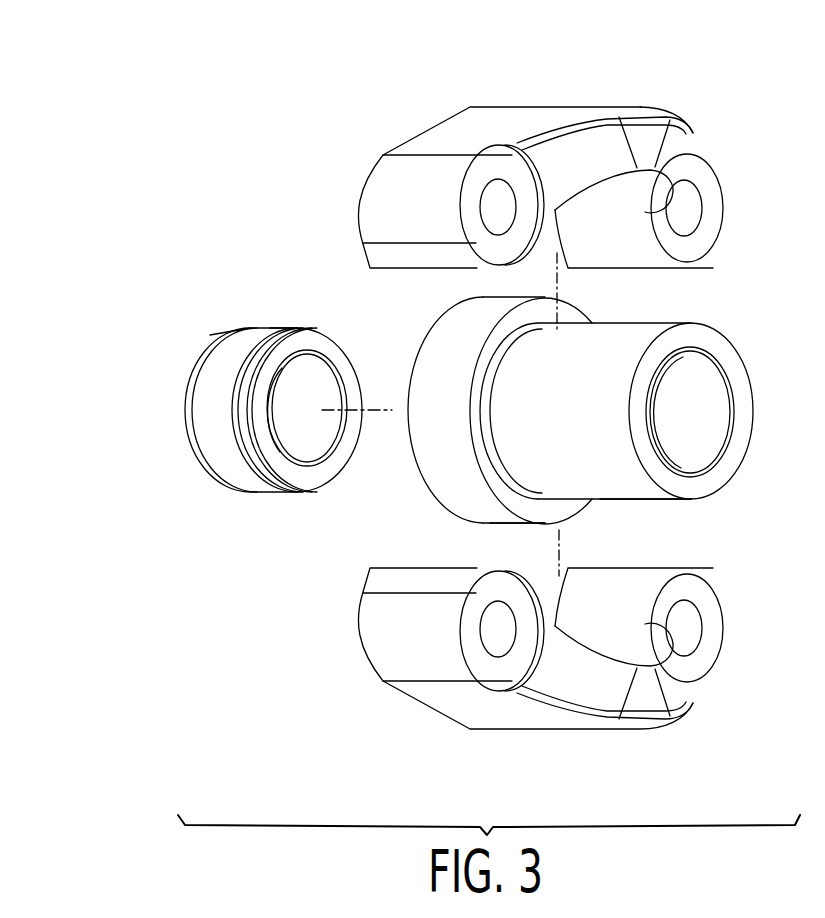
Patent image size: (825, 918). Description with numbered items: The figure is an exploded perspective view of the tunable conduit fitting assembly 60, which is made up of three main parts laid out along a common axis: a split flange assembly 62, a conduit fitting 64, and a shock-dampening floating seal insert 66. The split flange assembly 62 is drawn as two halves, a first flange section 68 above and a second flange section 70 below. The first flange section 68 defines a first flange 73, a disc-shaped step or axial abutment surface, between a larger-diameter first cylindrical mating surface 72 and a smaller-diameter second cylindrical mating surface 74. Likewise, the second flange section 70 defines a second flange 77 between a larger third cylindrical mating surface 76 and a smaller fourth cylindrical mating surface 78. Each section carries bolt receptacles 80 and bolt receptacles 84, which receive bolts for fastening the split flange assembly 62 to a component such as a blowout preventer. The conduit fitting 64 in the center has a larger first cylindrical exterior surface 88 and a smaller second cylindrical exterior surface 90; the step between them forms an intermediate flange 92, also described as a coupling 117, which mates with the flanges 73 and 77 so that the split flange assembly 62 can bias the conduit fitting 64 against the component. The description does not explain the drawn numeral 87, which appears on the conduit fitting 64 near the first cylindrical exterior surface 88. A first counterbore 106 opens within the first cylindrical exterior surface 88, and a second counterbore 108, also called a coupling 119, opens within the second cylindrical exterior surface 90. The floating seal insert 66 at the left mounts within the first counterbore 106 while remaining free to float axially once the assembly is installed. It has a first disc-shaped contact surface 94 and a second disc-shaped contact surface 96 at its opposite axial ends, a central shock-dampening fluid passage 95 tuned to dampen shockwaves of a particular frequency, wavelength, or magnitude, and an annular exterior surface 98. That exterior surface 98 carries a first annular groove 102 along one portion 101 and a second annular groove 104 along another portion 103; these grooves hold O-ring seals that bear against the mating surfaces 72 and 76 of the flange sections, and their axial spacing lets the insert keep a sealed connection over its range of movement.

The tunable conduit fitting assembly 60 is at (230, 237).
The split flange assembly 62 is at (522, 103).
The conduit fitting 64 is at (753, 485).
The floating seal insert 66 is at (178, 377).
The first flange section 68 is at (445, 133).
The second flange section 70 is at (438, 698).
The first cylindrical mating surface 72 is at (578, 238).
The first flange 73 is at (601, 242).
The second cylindrical mating surface 74 is at (620, 230).
The third cylindrical mating surface 76 is at (578, 612).
The second flange 77 is at (602, 583).
The fourth cylindrical mating surface 78 is at (618, 623).
The bolt receptacles 80 is at (496, 205).
The bolt receptacles 84 is at (503, 628).
The flange face 87 is at (418, 381).
The first cylindrical exterior surface 88 is at (450, 337).
The second cylindrical exterior surface 90 is at (642, 337).
The intermediate flange 92 is at (480, 455).
The first disc-shaped contact surface 94 is at (270, 453).
The shock-dampening fluid passage 95 is at (322, 435).
The second disc-shaped contact surface 96 is at (188, 443).
The annular exterior surface 98 is at (247, 337).
The portion 101 is at (222, 325).
The first annular groove 102 is at (190, 410).
The portion 103 is at (303, 320).
The second annular groove 104 is at (247, 360).
The first counterbore 106 is at (406, 420).
The second counterbore 108 is at (707, 404).
The coupling 117 is at (448, 520).
The coupling 119 is at (737, 342).